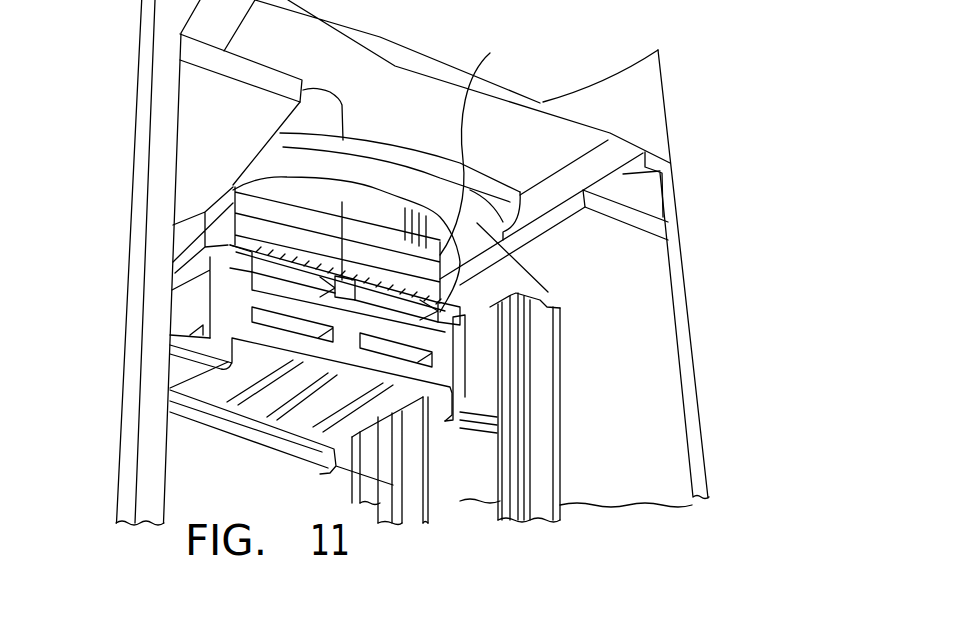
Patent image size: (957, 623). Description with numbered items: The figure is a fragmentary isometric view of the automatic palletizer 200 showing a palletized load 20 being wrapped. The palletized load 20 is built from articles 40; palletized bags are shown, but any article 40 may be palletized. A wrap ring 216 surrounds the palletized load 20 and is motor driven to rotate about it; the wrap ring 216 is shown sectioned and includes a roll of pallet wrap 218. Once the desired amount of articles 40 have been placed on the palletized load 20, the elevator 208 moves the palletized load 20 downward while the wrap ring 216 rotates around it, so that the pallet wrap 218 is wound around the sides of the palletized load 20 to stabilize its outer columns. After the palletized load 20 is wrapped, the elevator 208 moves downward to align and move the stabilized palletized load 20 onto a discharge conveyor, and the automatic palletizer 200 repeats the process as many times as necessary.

The palletized load 20 is at (170, 277).
The article 40 is at (277, 217).
The automatic palletizer 200 is at (676, 142).
The elevator 208 is at (472, 413).
The wrap ring 216 is at (477, 223).
The pallet wrap 218 is at (345, 130).